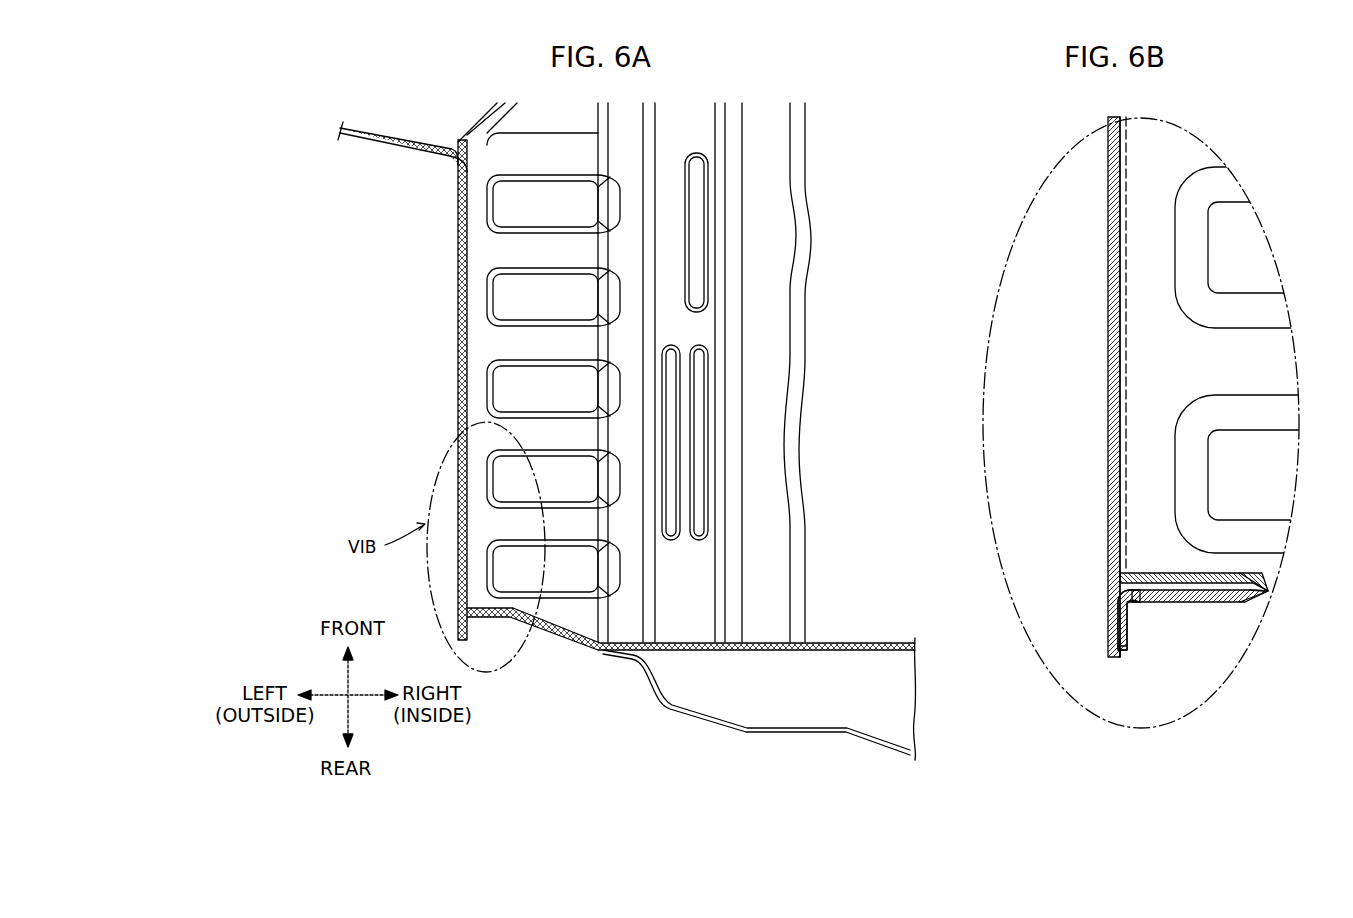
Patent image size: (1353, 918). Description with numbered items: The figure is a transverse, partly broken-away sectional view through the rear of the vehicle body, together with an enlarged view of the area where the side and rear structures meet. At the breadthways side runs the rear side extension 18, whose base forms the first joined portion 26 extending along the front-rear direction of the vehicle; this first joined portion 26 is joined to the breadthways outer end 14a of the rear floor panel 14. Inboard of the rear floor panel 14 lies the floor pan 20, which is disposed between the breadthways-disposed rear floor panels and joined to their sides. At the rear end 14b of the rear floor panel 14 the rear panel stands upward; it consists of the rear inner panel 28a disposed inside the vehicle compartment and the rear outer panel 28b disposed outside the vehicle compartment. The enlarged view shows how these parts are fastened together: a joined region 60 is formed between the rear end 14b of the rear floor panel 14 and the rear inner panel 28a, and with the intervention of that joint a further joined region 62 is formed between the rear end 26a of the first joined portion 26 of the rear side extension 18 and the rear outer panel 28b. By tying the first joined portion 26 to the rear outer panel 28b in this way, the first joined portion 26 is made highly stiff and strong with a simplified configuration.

In FIG. 6A, the rear floor panel 14 is at (628, 337).
In FIG. 6B, the rear floor panel 14 is at (1243, 363).
In FIG. 6B, the breadthways outer end 14a is at (1128, 348).
In FIG. 6B, the rear end 14b is at (1172, 573).
In FIG. 6A, the rear side extension 18 is at (452, 312).
In FIG. 6B, the rear side extension 18 is at (1096, 344).
In FIG. 6A, the floor pan 20 is at (760, 405).
In FIG. 6B, the first joined portion 26 is at (1121, 360).
In FIG. 6B, the rear end 26a is at (1110, 658).
In FIG. 6A, the rear inner panel 28a is at (823, 642).
In FIG. 6B, the rear inner panel 28a is at (1207, 602).
In FIG. 6A, the rear outer panel 28b is at (715, 718).
In FIG. 6B, the rear outer panel 28b is at (1127, 630).
In FIG. 6B, the joined region 60 is at (1223, 572).
In FIG. 6B, the joined region 62 is at (1130, 642).